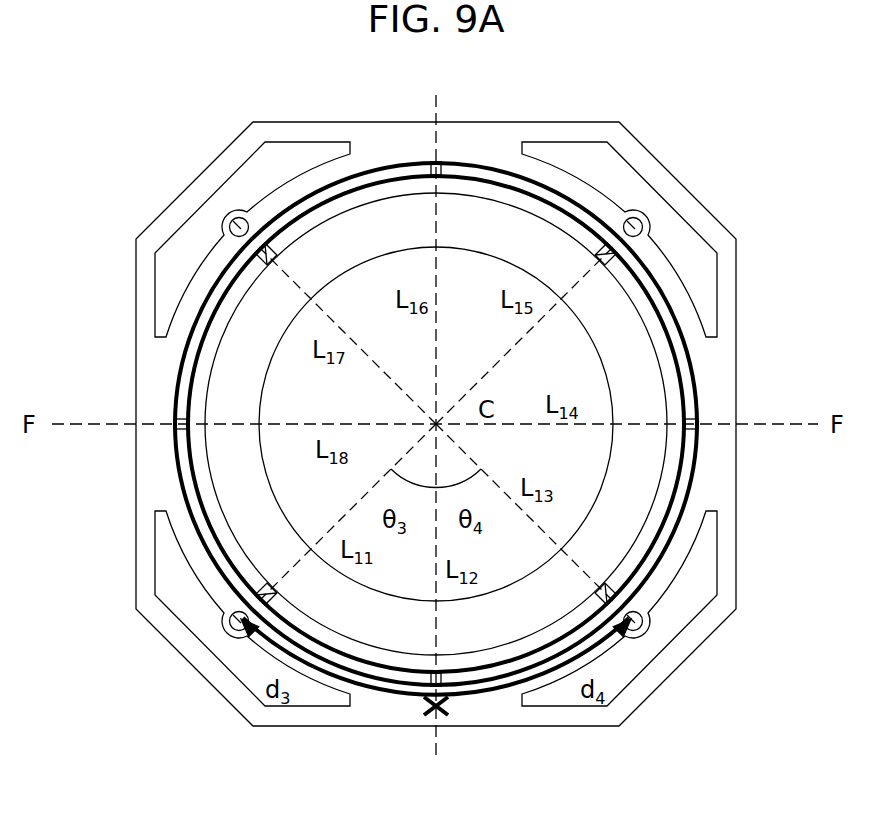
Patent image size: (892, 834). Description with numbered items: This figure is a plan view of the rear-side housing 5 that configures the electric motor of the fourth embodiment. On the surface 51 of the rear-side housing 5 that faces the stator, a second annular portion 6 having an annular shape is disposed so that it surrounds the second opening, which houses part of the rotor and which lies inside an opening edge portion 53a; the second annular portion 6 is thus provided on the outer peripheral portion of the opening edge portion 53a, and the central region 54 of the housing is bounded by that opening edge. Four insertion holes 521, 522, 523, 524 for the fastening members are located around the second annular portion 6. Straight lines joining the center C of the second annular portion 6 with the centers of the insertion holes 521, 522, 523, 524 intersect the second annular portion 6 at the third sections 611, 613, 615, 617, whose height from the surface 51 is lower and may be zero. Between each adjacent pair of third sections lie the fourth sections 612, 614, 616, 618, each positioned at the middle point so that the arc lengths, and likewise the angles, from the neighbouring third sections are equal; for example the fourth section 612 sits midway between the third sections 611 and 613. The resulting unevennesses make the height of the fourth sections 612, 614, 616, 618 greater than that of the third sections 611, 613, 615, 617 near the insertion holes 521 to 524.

The rear-side housing 5 is at (712, 215).
The second annular portion 6 is at (668, 312).
The surface of the rear-side housing 51 is at (724, 385).
The opening edge portion 53a is at (536, 216).
The opening 54 is at (449, 249).
The insertion hole 521 is at (228, 624).
The insertion hole 522 is at (645, 624).
The insertion hole 523 is at (632, 217).
The insertion hole 524 is at (243, 218).
The third section 611 is at (268, 592).
The fourth section 612 is at (445, 670).
The third section 613 is at (604, 586).
The fourth section 614 is at (688, 415).
The third section 615 is at (609, 262).
The fourth section 616 is at (441, 170).
The third section 617 is at (262, 250).
The fourth section 618 is at (180, 423).